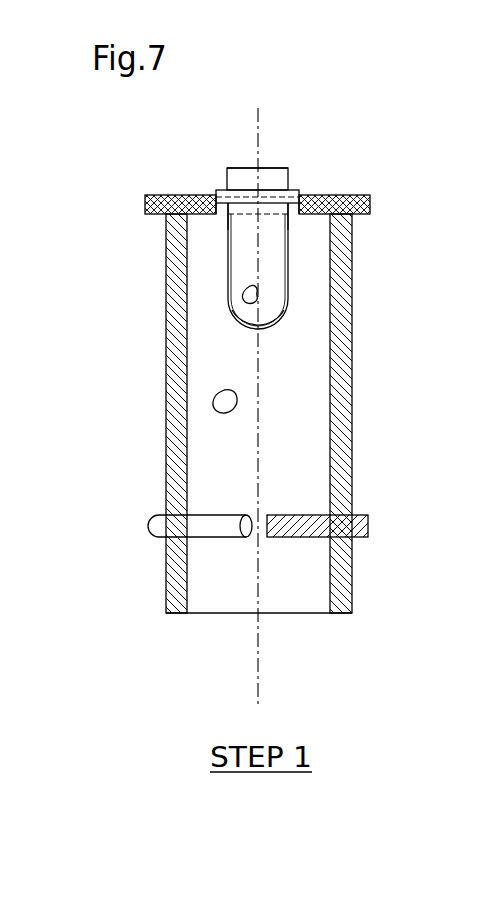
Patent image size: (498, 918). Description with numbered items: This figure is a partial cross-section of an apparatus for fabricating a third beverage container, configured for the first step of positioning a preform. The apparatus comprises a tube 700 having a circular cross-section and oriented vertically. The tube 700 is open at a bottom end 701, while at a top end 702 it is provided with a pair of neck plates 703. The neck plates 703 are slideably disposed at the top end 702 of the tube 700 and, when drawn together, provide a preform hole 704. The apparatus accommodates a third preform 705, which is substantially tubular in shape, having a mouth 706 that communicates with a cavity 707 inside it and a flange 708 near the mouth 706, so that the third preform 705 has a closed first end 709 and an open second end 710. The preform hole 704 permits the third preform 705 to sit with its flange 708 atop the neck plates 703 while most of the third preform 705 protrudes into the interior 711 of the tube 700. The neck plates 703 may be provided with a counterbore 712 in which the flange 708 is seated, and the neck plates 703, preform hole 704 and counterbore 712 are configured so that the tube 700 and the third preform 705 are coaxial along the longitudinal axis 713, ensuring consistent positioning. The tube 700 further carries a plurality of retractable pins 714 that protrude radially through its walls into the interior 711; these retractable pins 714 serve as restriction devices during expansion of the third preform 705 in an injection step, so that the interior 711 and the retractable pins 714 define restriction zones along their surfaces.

The tube 700 is at (163, 253).
The bottom end 701 is at (304, 616).
The top end 702 is at (297, 164).
The neck plates 703 is at (180, 191).
The preform hole 704 is at (295, 223).
The third preform 705 is at (295, 278).
The mouth 706 is at (242, 164).
The cavity 707 is at (239, 282).
The flange 708 is at (294, 180).
The closed first end 709 is at (232, 323).
The open second end 710 is at (274, 163).
The interior 711 is at (219, 385).
The counterbore 712 is at (303, 211).
The longitudinal axis 713 is at (256, 677).
The retractable pins 714 is at (312, 511).